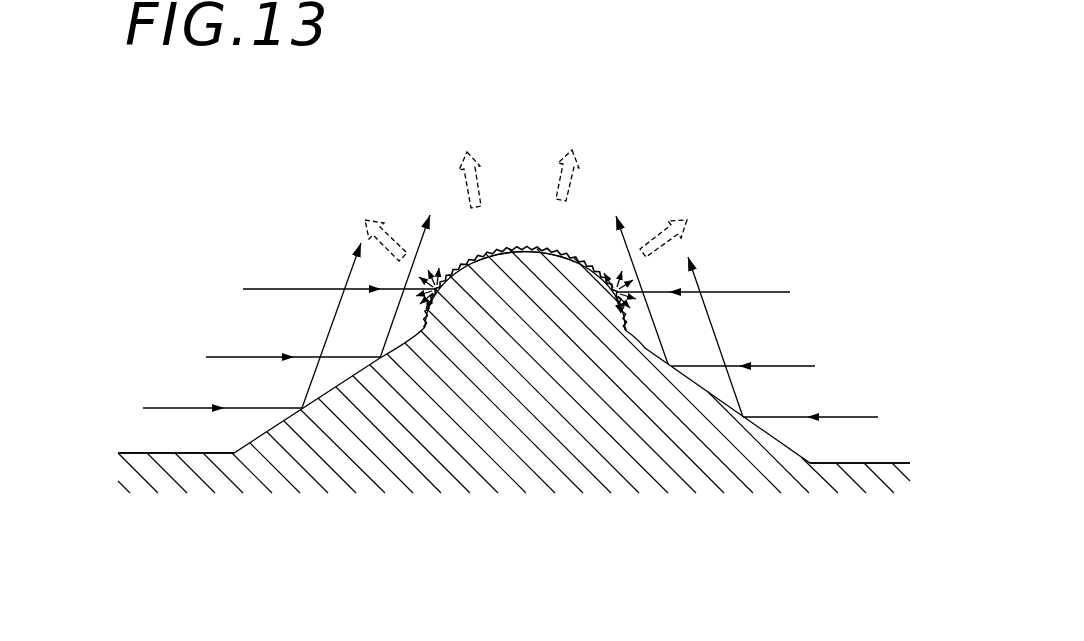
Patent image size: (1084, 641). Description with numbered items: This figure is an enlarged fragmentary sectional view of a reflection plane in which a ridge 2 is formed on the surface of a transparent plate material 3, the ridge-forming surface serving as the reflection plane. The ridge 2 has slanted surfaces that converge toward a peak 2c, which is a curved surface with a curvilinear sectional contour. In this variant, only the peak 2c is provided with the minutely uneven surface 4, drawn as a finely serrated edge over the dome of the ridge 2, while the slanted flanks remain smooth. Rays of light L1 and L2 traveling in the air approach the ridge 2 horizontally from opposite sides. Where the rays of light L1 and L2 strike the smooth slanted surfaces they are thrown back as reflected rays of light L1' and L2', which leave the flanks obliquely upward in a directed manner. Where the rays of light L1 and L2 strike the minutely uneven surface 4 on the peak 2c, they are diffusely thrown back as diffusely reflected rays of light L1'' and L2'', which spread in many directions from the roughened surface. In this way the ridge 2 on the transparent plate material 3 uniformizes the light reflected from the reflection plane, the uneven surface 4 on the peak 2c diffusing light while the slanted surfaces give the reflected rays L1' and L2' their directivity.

The ridge 2 is at (565, 457).
The peak 2c is at (513, 230).
The transparent plate material 3 is at (185, 471).
The minutely uneven surface 4 is at (483, 255).
The ray of light L1 is at (290, 348).
The reflected ray of light L1' is at (336, 311).
The diffusely reflected ray of light L1'' is at (402, 225).
The ray of light L2 is at (747, 354).
The reflected ray of light L2' is at (710, 316).
The diffusely reflected ray of light L2'' is at (644, 227).